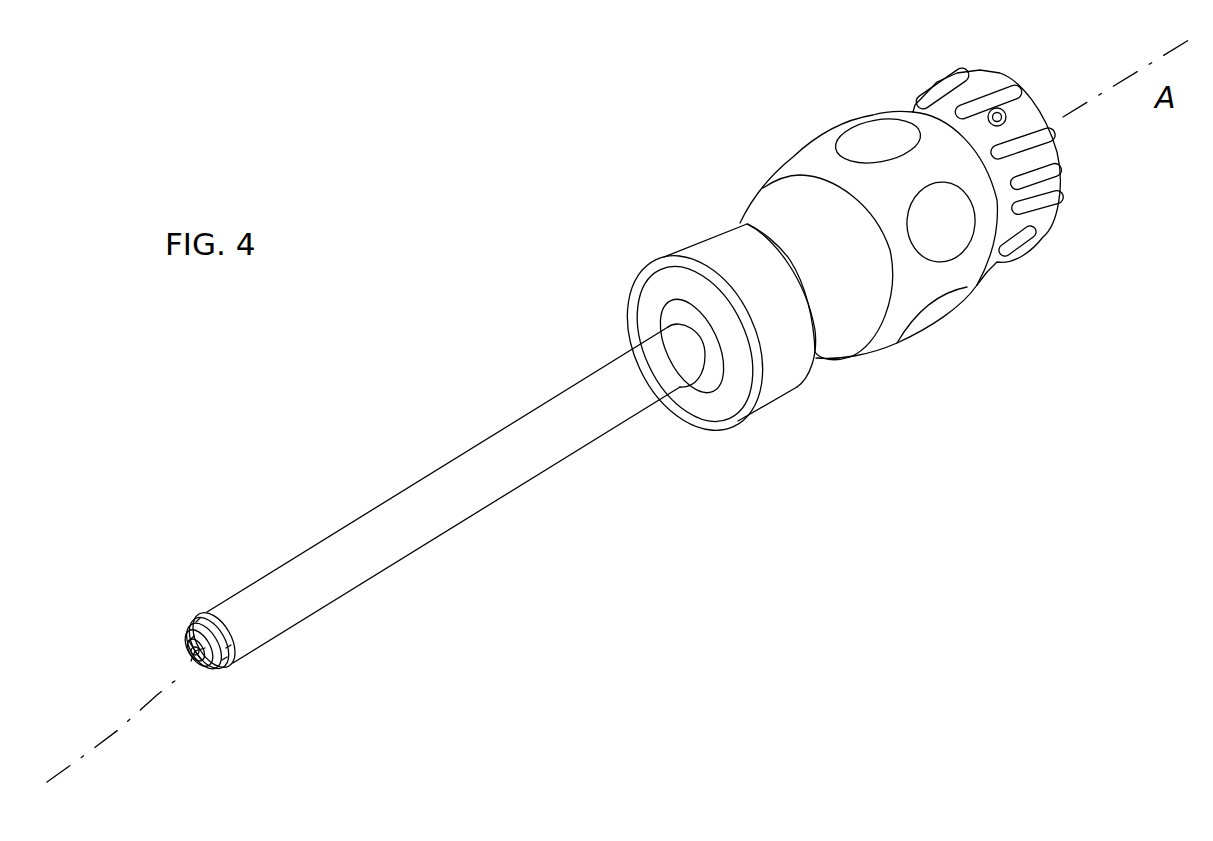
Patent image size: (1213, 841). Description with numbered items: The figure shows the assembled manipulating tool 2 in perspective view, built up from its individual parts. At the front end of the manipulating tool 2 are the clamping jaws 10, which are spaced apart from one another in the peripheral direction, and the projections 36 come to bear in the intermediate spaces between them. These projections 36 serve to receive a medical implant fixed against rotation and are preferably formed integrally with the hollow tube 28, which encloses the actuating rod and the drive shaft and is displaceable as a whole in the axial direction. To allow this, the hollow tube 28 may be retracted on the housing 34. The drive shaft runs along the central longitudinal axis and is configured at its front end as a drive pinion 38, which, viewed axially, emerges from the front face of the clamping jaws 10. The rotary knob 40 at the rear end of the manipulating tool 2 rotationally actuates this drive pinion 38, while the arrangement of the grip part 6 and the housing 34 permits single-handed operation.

The manipulating tool 2 is at (647, 429).
The grip part 6 is at (887, 352).
The clamping jaws 10 is at (202, 673).
The hollow tube 28 is at (423, 548).
The housing 34 is at (783, 380).
The projections 36 is at (208, 612).
The drive pinion 38 is at (187, 655).
The rotary knob 40 is at (1047, 207).